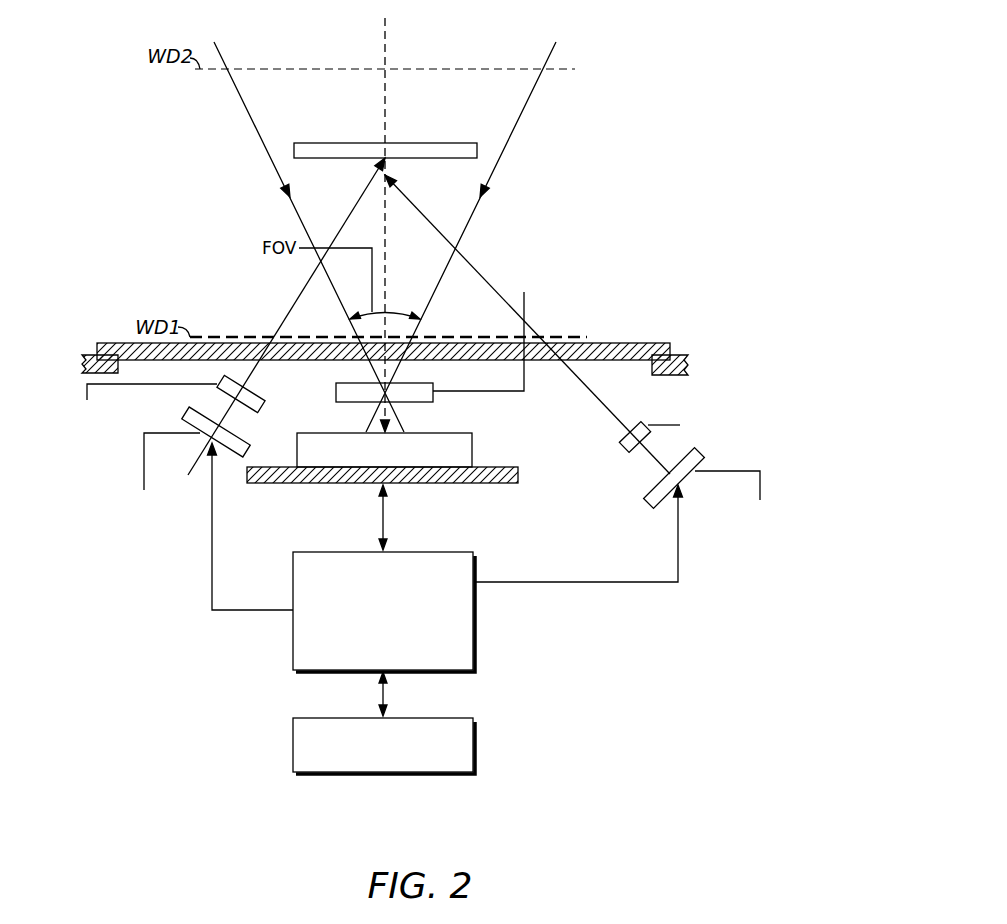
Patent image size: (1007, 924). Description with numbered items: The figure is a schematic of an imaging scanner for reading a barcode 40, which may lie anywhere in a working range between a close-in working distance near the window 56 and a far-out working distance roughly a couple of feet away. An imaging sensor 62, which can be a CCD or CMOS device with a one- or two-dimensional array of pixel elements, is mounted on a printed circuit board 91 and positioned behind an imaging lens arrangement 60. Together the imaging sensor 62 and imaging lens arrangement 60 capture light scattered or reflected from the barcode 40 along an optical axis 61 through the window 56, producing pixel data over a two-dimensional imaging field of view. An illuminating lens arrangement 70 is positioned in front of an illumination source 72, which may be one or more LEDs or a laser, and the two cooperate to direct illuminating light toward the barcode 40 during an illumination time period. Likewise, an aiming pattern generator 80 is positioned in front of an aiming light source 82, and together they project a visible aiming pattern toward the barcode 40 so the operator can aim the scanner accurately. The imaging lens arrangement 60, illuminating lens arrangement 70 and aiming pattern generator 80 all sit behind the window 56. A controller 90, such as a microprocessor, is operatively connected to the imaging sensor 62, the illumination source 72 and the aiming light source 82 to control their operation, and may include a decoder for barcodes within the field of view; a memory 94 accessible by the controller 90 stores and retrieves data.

The barcode 40 is at (446, 143).
The window 56 is at (118, 344).
The imaging lens arrangement 60 is at (336, 392).
The optical axis 61 is at (386, 42).
The imaging sensor 62 is at (462, 433).
The illuminating lens arrangement 70 is at (764, 393).
The illumination source 72 is at (765, 545).
The aiming pattern generator 80 is at (62, 398).
The aiming light source 82 is at (140, 540).
The controller 90 is at (460, 552).
The printed circuit board 91 is at (433, 483).
The memory 94 is at (460, 718).